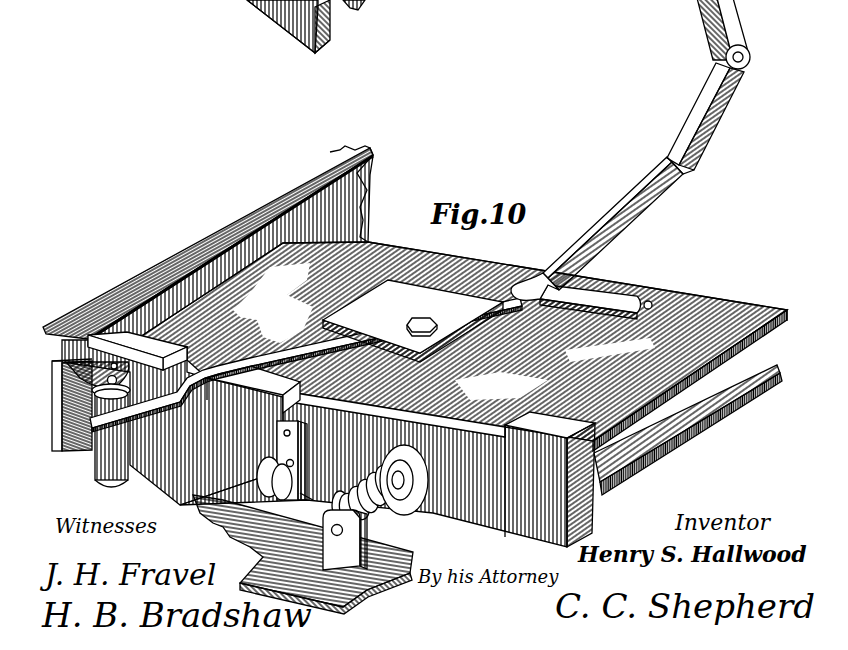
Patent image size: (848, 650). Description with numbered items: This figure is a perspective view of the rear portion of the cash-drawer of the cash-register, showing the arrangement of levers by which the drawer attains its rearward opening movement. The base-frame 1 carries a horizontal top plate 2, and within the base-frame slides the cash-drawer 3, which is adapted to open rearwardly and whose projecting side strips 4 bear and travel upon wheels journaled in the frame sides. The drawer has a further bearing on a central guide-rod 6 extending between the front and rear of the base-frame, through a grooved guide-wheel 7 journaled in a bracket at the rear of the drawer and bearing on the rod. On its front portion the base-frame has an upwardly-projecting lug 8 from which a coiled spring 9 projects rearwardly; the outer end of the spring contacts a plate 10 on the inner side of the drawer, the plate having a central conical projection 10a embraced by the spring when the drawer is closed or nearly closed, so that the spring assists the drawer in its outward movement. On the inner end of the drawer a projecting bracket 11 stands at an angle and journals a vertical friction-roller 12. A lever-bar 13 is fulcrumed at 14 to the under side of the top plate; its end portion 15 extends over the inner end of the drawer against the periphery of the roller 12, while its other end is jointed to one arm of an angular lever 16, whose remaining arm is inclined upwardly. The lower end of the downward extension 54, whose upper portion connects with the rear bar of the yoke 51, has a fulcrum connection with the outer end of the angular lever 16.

The base-frame 1 is at (377, 577).
The horizontal top plate 2 is at (452, 300).
The sliding cash-drawer 3 is at (717, 300).
The projecting side strips 4 is at (210, 228).
The central guide-rod 6 is at (309, 505).
The grooved guide-wheel 7 is at (267, 484).
The upwardly-projecting lug 8 is at (360, 548).
The coiled spring 9 is at (393, 513).
The plate 10 is at (427, 507).
The central conical projection 10a is at (357, 480).
The projecting bracket 11 is at (62, 385).
The vertical friction-roller 12 is at (105, 455).
The lever-bar 13 is at (622, 298).
The fulcrum 14 is at (416, 317).
The end portion of lever-bar 15 is at (171, 398).
The angular lever 16 is at (652, 196).
The yoke 51 is at (275, 26).
The downward extension 54 is at (726, 13).